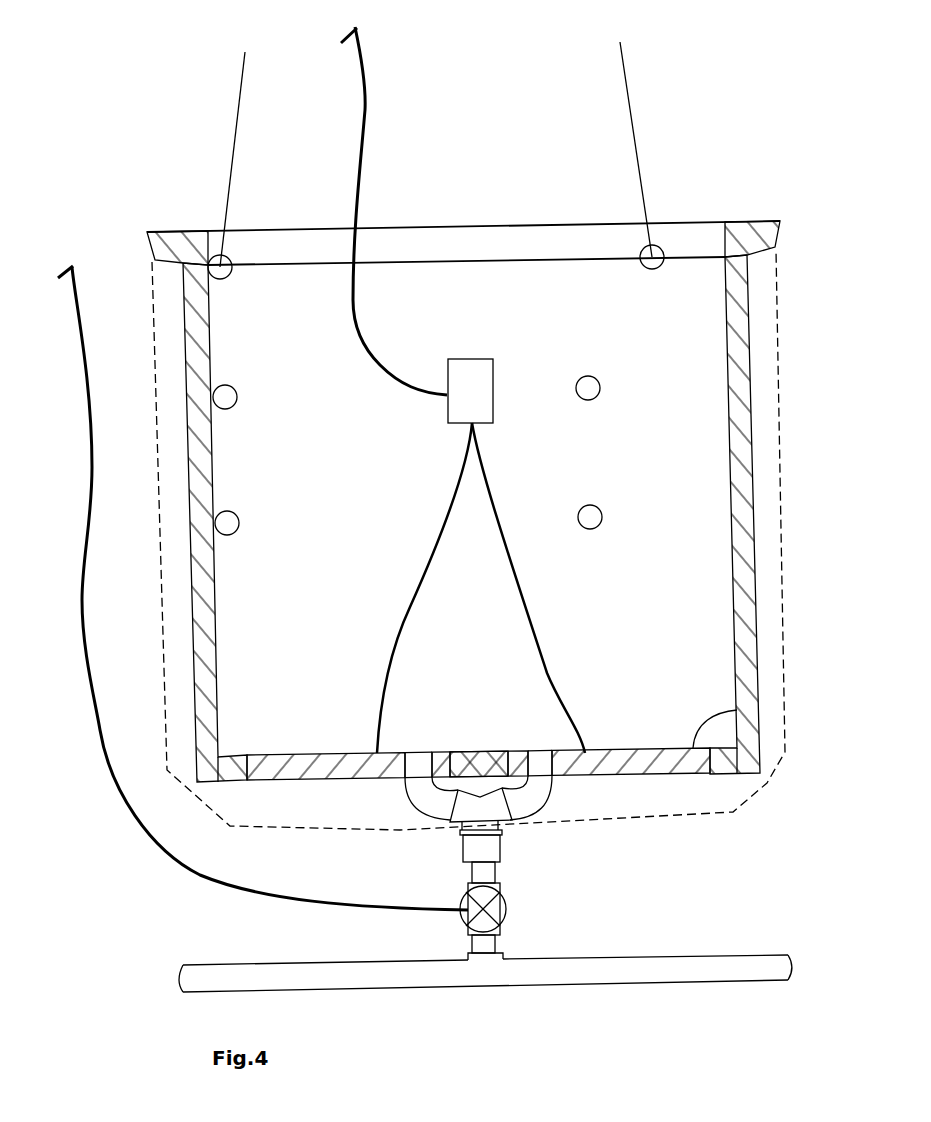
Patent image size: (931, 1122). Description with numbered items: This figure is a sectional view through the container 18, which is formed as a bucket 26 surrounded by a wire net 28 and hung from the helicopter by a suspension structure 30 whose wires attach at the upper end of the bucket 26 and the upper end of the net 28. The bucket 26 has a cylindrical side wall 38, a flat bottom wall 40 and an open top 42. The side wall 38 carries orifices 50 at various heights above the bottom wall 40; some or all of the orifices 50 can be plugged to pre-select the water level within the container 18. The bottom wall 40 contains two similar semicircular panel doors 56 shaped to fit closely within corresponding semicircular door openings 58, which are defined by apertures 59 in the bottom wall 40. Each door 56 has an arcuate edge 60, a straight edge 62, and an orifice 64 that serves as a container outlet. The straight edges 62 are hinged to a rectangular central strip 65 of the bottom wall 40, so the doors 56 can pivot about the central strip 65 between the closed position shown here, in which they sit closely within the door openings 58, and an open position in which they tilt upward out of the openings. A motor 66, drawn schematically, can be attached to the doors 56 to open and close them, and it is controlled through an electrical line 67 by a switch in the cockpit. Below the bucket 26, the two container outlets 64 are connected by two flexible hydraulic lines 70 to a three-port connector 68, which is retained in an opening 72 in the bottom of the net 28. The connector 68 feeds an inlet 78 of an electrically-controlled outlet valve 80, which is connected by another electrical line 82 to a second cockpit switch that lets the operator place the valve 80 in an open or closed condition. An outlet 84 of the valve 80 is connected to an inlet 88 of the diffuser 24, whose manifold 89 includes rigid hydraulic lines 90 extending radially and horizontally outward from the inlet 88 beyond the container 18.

The container 18 is at (693, 168).
The diffuser 24 is at (755, 882).
The bucket 26 is at (750, 343).
The wire net 28 is at (778, 372).
The suspension structure 30 is at (238, 119).
The side wall 38 is at (752, 435).
The bottom wall 40 is at (638, 774).
The open top 42 is at (452, 223).
The orifices 50 is at (598, 512).
The panel doors 56 is at (280, 782).
The door openings 58 is at (322, 755).
The apertures 59 is at (703, 715).
The arcuate edge 60 is at (713, 762).
The straight edge 62 is at (457, 752).
The orifice 64 is at (414, 752).
The central strip 65 is at (480, 752).
The motor 66 is at (450, 380).
The electrical line 67 is at (365, 92).
The 3-port connector 68 is at (472, 840).
The flexible hydraulic lines 70 is at (428, 798).
The opening 72 is at (500, 832).
The inlet 78 is at (500, 892).
The outlet valve 80 is at (472, 917).
The electrical line 82 is at (85, 625).
The outlet 84 is at (482, 935).
The inlet 88 is at (490, 957).
The manifold 89 is at (768, 918).
The rigid hydraulic lines 90 is at (673, 962).